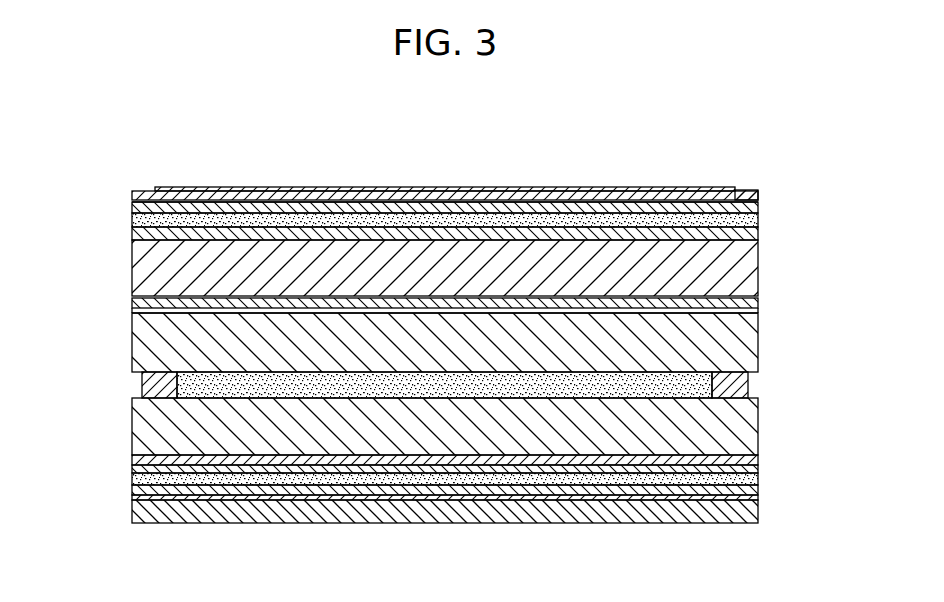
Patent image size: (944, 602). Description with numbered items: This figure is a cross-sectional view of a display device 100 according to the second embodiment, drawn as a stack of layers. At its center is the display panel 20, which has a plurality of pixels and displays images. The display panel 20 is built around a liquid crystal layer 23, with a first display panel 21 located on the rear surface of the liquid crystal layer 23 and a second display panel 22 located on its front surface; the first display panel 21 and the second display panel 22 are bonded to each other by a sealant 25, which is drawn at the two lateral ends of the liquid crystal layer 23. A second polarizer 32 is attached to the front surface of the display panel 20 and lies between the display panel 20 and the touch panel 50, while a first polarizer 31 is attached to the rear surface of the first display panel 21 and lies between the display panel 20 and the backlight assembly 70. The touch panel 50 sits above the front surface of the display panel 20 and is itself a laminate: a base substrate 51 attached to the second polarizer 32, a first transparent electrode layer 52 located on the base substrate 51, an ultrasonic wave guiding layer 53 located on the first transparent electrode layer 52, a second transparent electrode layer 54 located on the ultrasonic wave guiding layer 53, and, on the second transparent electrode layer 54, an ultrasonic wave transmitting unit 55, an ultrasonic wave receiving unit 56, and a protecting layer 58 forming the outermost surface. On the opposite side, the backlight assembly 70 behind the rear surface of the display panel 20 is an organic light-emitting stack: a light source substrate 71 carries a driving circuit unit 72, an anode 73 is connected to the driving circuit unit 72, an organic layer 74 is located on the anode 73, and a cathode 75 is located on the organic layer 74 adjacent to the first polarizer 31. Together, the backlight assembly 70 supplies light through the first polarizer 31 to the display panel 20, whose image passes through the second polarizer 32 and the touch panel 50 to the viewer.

The display device 100 is at (463, 113).
The touch panel 50 is at (74, 152).
The protecting layer 58 is at (170, 187).
The ultrasonic wave receiving unit 56 is at (740, 193).
The ultrasonic wave transmitting unit 55 is at (132, 197).
The second transparent electrode layer 54 is at (132, 207).
The ultrasonic wave guiding layer 53 is at (132, 219).
The first transparent electrode layer 52 is at (132, 233).
The base substrate 51 is at (145, 267).
The second polarizer 32 is at (758, 304).
The display panel 20 is at (814, 333).
The second display panel 22 is at (750, 340).
The liquid crystal layer 23 is at (742, 380).
The sealant 25 is at (735, 386).
The first display panel 21 is at (750, 433).
The first polarizer 31 is at (758, 461).
The backlight assembly 70 is at (76, 457).
The cathode 75 is at (132, 472).
The organic layer 74 is at (132, 480).
The anode 73 is at (132, 490).
The driving circuit unit 72 is at (132, 505).
The light source substrate 71 is at (167, 523).